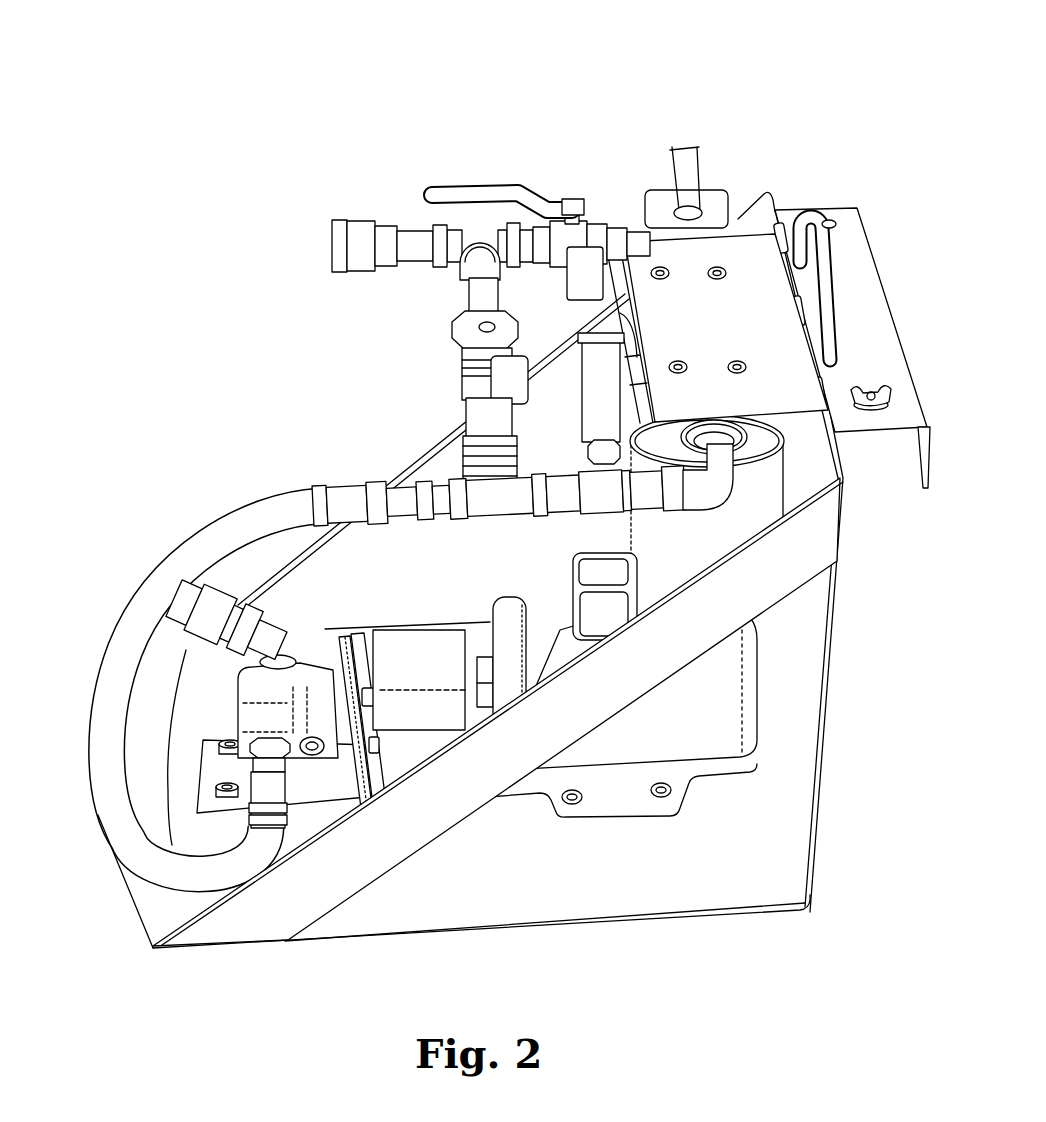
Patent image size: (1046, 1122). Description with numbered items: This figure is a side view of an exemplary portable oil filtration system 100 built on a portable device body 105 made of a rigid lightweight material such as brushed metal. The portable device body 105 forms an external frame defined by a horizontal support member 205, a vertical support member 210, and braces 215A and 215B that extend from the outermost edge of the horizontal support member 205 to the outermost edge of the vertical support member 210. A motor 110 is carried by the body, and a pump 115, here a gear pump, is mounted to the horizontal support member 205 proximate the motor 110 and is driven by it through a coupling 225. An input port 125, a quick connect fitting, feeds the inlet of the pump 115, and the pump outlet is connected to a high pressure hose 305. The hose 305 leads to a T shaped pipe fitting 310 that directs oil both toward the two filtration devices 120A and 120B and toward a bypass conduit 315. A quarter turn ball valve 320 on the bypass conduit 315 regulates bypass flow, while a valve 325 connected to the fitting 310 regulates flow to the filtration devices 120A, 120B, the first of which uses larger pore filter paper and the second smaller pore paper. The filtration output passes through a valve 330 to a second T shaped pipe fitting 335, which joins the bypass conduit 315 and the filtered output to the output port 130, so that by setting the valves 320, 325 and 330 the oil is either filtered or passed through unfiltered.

The portable oil filtration system 100 is at (515, 501).
The portable device body 105 is at (886, 348).
The motor 110 is at (665, 735).
The pump 115 is at (262, 678).
The filtration device 120A is at (755, 507).
The filtration device 120B is at (610, 245).
The input port 125 is at (178, 597).
The output port 130 is at (330, 243).
The horizontal support member 205 is at (750, 880).
The vertical support member 210 is at (824, 718).
The brace 215A is at (442, 467).
The brace 215B is at (310, 897).
The coupling 225 is at (410, 653).
The high pressure hose 305 is at (112, 798).
The "T" shaped pipe fitting 310 is at (488, 505).
The bypass conduit 315 is at (468, 325).
The valve 320 is at (458, 370).
The valve 325 is at (600, 382).
The valve 330 is at (465, 185).
The second "T" shaped pipe fitting 335 is at (462, 252).